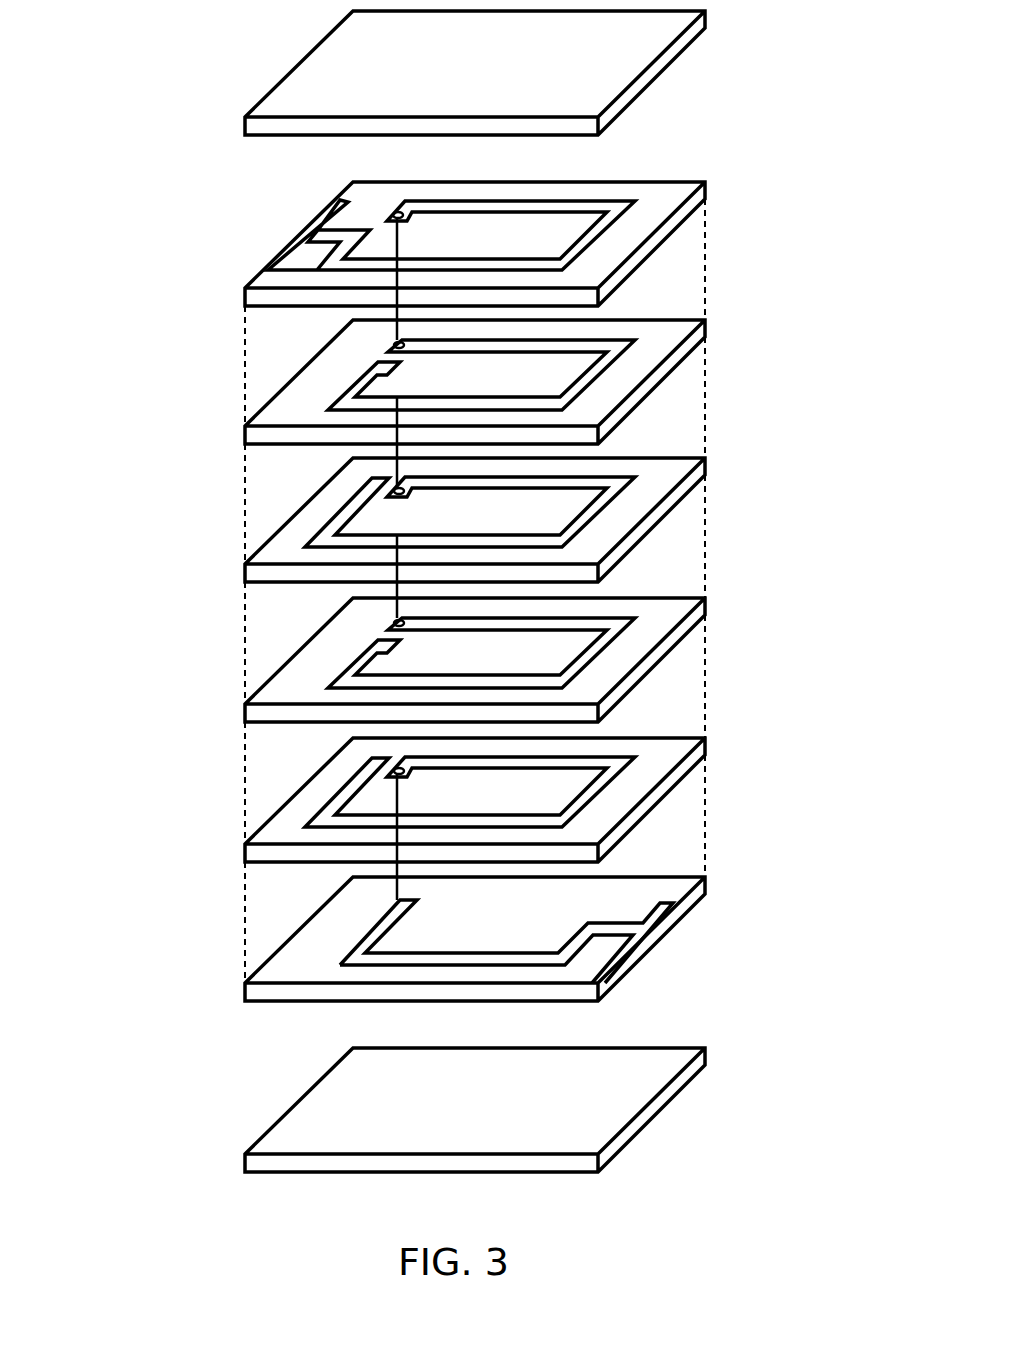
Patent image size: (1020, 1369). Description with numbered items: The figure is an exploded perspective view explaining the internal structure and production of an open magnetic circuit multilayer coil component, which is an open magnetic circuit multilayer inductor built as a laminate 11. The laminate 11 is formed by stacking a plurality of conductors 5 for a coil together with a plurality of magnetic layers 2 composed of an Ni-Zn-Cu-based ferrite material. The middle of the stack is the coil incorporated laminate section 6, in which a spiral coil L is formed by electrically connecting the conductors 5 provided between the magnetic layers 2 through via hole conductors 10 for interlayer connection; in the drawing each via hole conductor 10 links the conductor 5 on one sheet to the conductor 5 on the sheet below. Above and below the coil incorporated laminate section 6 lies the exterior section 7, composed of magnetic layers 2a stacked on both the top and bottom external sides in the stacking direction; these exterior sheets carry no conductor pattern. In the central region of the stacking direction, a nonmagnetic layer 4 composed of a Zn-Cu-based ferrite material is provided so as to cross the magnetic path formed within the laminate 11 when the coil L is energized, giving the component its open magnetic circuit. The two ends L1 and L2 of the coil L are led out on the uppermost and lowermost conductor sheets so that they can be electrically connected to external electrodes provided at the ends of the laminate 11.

The laminate 11 is at (115, 194).
The exterior section 7 is at (489, 591).
The magnetic layer for exterior 2a is at (648, 45).
The magnetic layer 2 is at (660, 200).
The nonmagnetic layer 4 is at (653, 495).
The conductor for a coil 5 is at (481, 597).
The coil incorporated laminate section 6 is at (150, 1008).
The via hole conductor 10 is at (395, 215).
The coil L is at (617, 473).
The end of the coil L1 is at (322, 231).
The end of the coil L2 is at (612, 930).